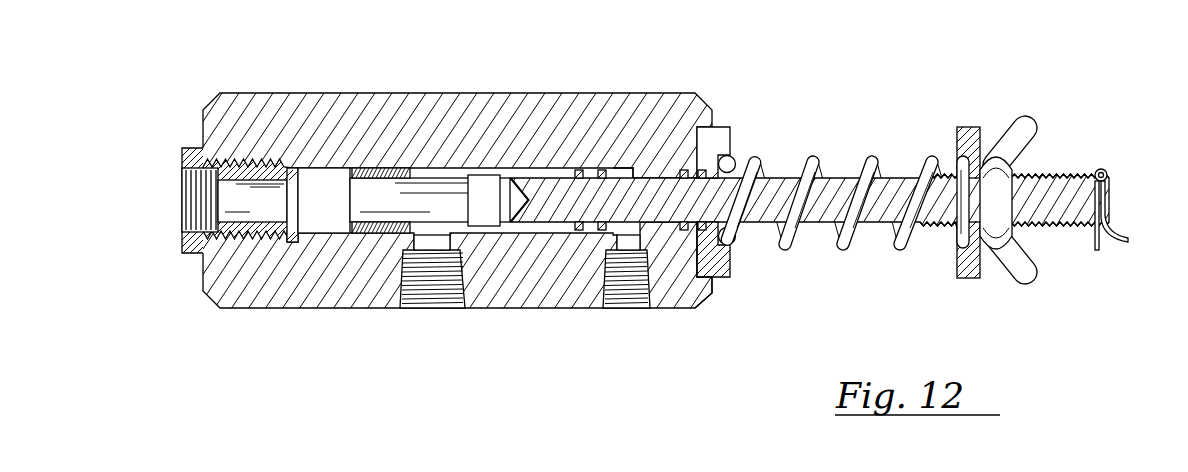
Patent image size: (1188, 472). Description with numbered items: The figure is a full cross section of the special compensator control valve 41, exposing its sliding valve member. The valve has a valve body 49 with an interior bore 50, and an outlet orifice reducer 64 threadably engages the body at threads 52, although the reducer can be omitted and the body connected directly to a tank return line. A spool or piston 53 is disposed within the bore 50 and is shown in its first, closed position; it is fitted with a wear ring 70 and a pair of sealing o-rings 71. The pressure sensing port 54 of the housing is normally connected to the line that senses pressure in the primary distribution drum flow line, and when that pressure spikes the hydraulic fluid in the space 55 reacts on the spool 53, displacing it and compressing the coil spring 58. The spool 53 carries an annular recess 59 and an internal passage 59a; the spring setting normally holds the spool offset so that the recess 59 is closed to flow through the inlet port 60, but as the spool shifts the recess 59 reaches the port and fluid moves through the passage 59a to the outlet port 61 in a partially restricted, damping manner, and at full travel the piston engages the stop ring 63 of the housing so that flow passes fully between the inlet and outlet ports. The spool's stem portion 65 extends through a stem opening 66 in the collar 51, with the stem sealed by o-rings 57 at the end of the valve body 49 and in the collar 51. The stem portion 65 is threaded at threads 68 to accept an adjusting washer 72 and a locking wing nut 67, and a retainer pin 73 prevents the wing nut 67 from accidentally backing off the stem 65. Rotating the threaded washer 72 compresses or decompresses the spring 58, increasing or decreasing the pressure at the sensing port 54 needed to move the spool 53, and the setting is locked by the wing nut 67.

The special compensator control valve 41 is at (509, 349).
The valve body 49 is at (293, 296).
The interior bore 50 is at (433, 168).
The collar 51 is at (723, 278).
The threads 52 is at (262, 160).
The spool or piston 53 is at (683, 173).
The pressure sensing port 54 is at (628, 308).
The space 55 is at (622, 170).
The o-rings 57 is at (695, 127).
The coil spring 58 is at (786, 250).
The annular recess 59 is at (488, 173).
The passage 59a is at (428, 183).
The inlet port 60 is at (438, 308).
The outlet port 61 is at (183, 180).
The stop ring 63 is at (290, 176).
The outlet orifice reducer 64 is at (225, 176).
The stem portion 65 is at (778, 186).
The stem opening 66 is at (727, 155).
The locking wing nut 67 is at (1030, 138).
The threads 68 is at (933, 236).
The wear ring 70 is at (383, 168).
The sealing o-rings 71 is at (603, 168).
The adjusting washer 72 is at (967, 128).
The retainer pin 73 is at (1102, 168).